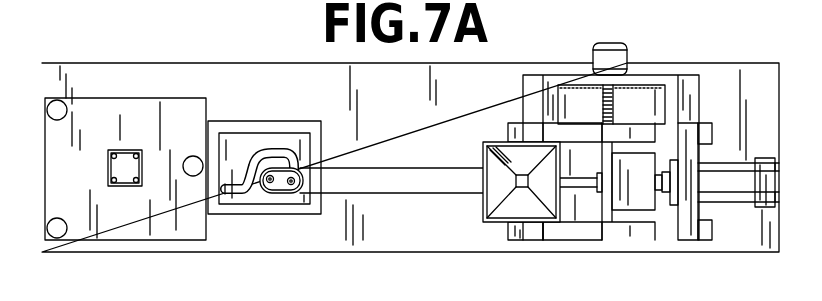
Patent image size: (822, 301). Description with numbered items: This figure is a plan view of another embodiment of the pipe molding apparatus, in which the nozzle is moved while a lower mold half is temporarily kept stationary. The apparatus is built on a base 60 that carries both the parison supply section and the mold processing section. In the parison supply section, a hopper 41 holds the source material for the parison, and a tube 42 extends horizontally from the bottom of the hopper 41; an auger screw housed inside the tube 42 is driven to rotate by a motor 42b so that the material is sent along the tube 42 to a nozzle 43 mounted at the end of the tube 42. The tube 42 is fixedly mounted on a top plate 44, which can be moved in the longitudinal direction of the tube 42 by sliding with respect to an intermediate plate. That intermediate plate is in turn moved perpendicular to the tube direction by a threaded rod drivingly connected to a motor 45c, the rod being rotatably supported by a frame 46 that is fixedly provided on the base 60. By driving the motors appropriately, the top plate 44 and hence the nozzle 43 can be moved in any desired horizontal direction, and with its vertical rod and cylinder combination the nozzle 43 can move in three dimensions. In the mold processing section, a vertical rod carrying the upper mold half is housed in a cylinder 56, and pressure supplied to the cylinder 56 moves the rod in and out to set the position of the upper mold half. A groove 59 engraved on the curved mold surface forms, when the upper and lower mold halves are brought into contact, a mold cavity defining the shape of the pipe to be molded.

The hopper 41 is at (484, 145).
The tube 42 is at (400, 178).
The motor 42b is at (642, 205).
The nozzle 43 is at (288, 193).
The top plate 44 is at (577, 217).
The motor 45c is at (593, 54).
The frame 46 is at (670, 82).
The cylinder 56 is at (125, 169).
The groove 59 is at (268, 144).
The base 60 is at (336, 240).